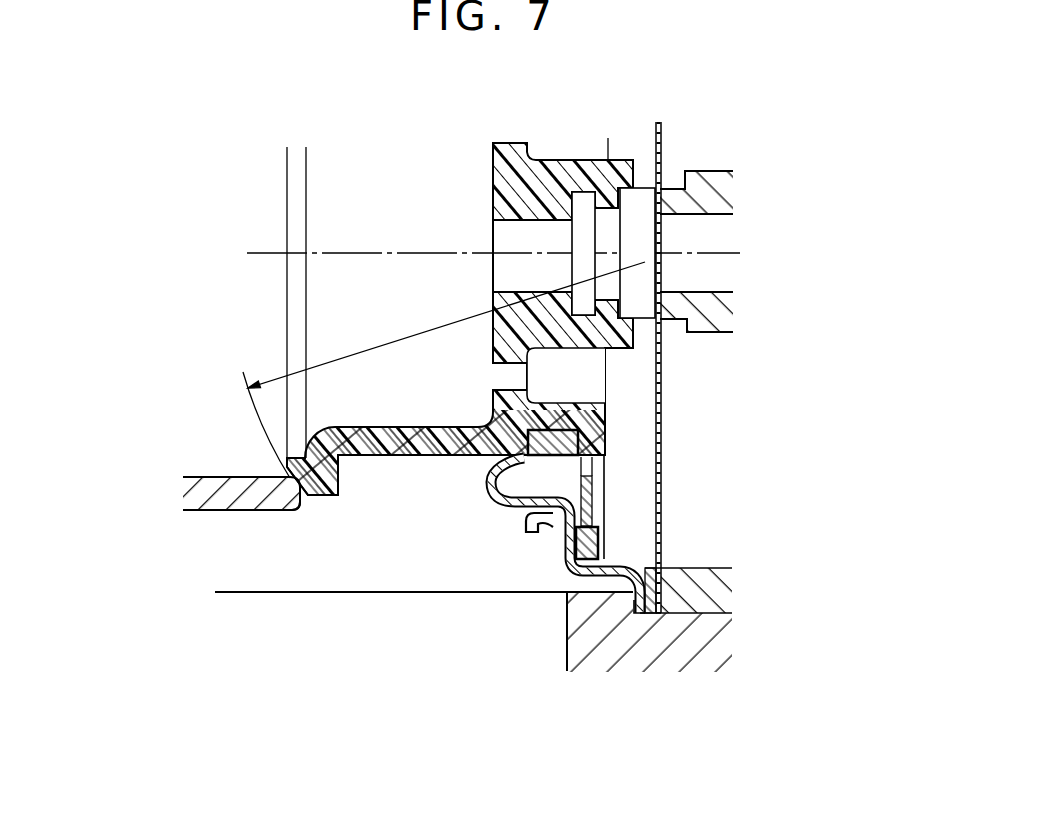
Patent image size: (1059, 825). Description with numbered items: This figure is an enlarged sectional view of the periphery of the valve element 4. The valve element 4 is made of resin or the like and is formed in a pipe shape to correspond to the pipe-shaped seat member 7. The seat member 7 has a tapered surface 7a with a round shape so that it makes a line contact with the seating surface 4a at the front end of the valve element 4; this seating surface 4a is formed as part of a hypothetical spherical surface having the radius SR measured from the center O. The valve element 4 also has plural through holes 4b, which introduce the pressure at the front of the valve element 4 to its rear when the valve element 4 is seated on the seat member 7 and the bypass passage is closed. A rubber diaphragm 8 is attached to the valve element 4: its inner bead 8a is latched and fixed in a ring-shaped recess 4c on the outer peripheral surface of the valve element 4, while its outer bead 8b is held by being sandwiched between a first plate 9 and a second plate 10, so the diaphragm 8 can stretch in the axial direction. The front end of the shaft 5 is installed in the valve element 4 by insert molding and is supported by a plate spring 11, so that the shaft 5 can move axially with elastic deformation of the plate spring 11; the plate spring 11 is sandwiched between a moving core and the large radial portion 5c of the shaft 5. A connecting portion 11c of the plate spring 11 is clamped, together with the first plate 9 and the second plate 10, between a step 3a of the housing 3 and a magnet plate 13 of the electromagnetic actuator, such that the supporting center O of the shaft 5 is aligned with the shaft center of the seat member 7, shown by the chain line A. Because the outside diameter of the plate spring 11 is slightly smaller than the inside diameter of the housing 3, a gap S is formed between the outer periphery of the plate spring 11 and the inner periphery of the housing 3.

The housing 3 is at (592, 645).
The step of the housing 3a is at (612, 612).
The valve element 4 is at (568, 157).
The seating surface 4a is at (287, 477).
The through holes 4b is at (516, 382).
The ring-shaped recess 4c is at (527, 533).
The shaft 5 is at (718, 223).
The large radial portion 5c is at (642, 200).
The seat member 7 is at (285, 510).
The tapered surface 7a is at (309, 505).
The diaphragm 8 is at (535, 462).
The inner bead 8a is at (578, 440).
The outer bead 8b is at (582, 540).
The first plate 9 is at (565, 574).
The second plate 10 is at (578, 501).
The plate spring 11 is at (662, 456).
The connecting portion 11c is at (661, 587).
The magnet plate 13 is at (707, 605).
The gap S is at (659, 613).
The chain line A is at (481, 254).
The supporting center O is at (645, 276).
The radius SR is at (444, 370).